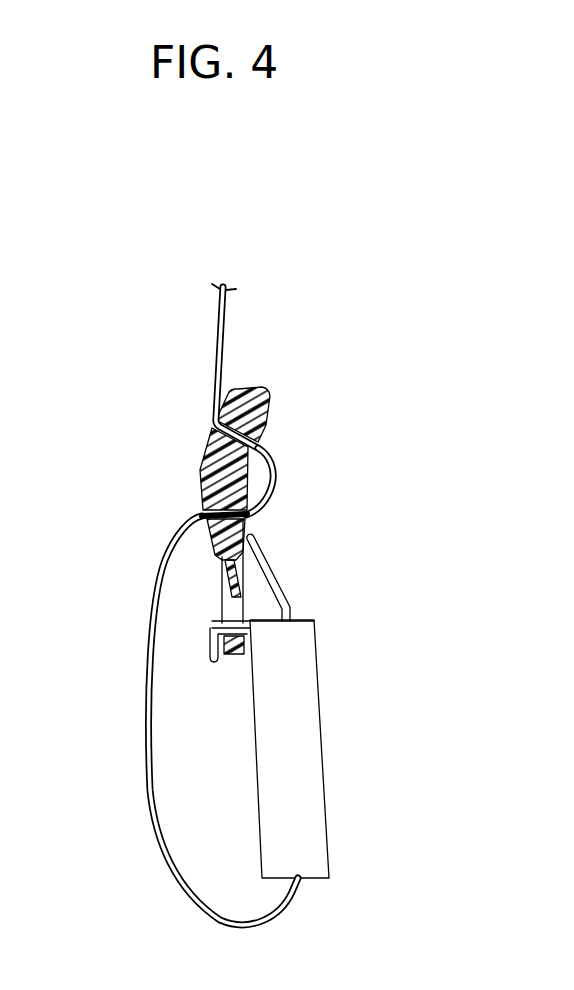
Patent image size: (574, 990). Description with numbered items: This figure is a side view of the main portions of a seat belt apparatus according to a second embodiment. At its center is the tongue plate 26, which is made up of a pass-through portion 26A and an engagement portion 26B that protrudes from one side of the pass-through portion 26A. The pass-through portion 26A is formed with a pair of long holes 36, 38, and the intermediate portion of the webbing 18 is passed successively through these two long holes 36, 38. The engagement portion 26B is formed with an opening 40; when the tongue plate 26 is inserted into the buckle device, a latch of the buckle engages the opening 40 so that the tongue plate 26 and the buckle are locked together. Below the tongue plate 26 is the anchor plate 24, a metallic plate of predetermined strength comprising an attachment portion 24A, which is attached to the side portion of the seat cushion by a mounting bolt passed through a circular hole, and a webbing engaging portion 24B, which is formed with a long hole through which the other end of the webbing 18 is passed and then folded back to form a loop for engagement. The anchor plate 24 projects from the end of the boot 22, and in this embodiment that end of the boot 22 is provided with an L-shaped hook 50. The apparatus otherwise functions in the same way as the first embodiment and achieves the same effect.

The webbing 18 is at (147, 778).
The boot 22 is at (312, 753).
The anchor plate 24 is at (330, 581).
The attachment portion 24A is at (275, 577).
The webbing engaging portion 24B is at (291, 612).
The tongue plate 26 is at (259, 390).
The pass-through portion 26A is at (210, 473).
The engagement portion 26B is at (223, 582).
The long hole 36 is at (268, 452).
The long hole 38 is at (248, 516).
The opening 40 is at (223, 603).
The L-shaped hook 50 is at (209, 645).